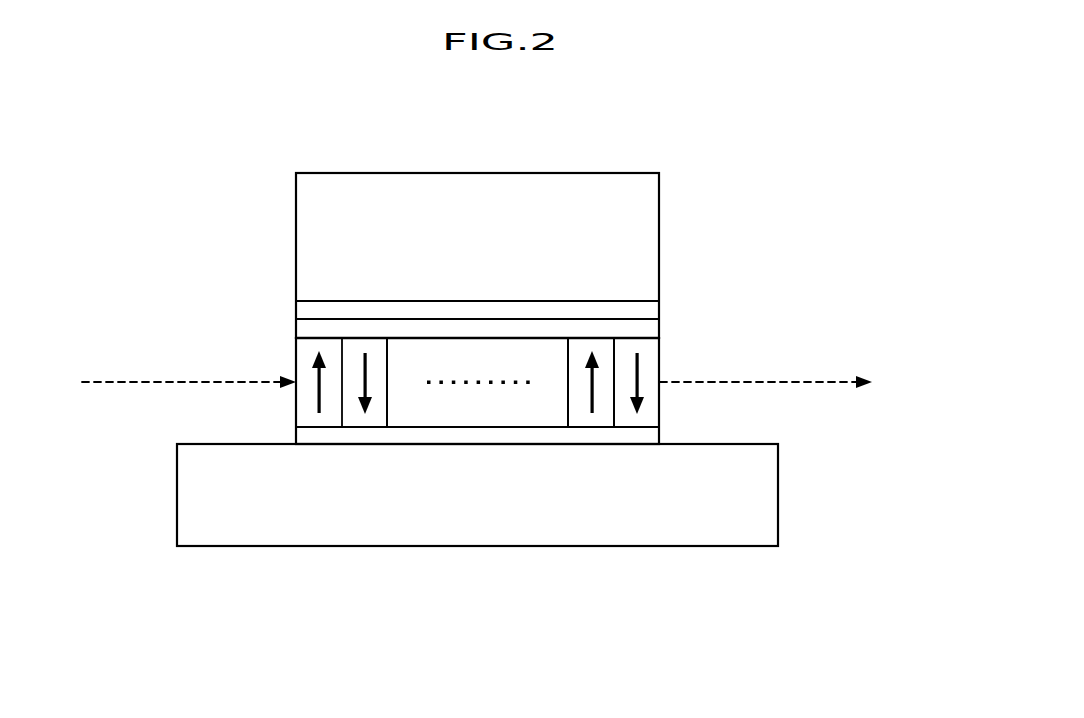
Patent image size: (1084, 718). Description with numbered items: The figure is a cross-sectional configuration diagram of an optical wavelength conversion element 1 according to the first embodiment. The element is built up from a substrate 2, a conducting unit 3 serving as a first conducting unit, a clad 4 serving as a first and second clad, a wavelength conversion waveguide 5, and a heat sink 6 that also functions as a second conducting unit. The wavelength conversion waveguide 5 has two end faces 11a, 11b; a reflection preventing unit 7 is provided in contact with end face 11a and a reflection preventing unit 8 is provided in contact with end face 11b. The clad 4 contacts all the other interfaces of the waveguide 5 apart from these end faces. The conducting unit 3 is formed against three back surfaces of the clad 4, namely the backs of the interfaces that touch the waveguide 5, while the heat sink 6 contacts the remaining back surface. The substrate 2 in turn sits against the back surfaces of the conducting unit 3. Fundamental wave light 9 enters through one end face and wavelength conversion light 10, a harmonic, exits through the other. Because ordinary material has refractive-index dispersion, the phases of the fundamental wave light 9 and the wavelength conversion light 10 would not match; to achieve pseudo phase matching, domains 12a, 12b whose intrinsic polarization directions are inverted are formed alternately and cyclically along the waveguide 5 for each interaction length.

The optical wavelength conversion element 1 is at (553, 183).
The substrate 2 is at (647, 190).
The conducting unit 3 is at (648, 311).
The clad 4 is at (306, 324).
The wavelength conversion waveguide 5 is at (477, 418).
The heat sink 6 is at (778, 495).
The reflection preventing unit 7 is at (297, 353).
The reflection preventing unit 8 is at (659, 351).
The fundamental wave light 9 is at (116, 384).
The wavelength conversion light 10 is at (820, 384).
The end face 11a is at (296, 405).
The end face 11b is at (660, 410).
The domain 12a is at (592, 418).
The domain 12b is at (637, 418).